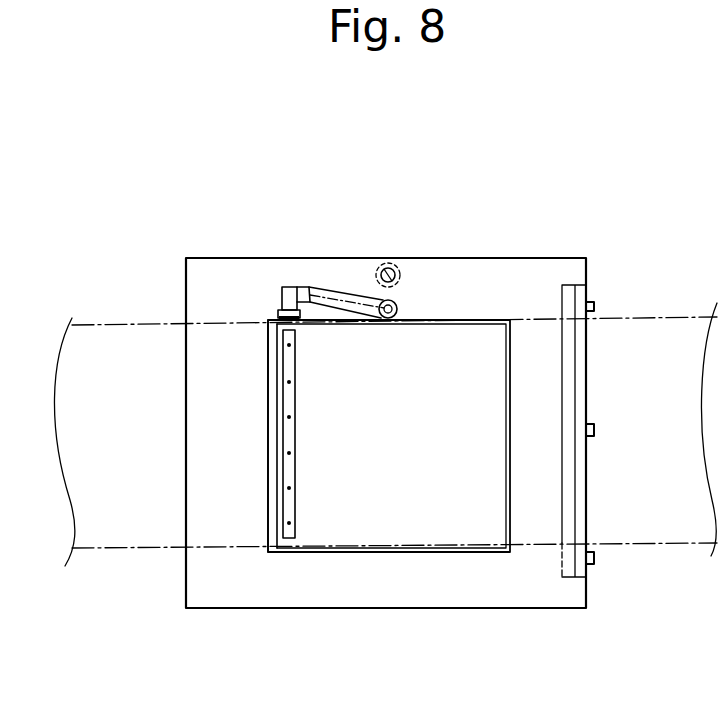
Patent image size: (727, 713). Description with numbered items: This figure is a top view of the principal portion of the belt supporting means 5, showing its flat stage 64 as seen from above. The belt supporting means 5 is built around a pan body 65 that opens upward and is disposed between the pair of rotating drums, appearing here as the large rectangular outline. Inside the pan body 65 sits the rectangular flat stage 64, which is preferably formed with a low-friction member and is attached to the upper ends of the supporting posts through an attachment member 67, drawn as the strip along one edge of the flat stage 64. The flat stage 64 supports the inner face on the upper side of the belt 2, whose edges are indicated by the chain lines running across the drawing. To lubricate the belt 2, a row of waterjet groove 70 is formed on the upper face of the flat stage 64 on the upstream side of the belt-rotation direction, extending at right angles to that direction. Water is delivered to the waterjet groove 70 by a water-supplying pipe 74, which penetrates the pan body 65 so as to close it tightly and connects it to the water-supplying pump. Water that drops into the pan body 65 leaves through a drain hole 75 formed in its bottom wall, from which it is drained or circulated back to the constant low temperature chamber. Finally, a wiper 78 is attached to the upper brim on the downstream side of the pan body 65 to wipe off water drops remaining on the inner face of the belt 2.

The belt 2 is at (661, 314).
The belt supporting means 5 is at (460, 203).
The flat stage 64 is at (464, 404).
The pan body 65 is at (254, 256).
The attachment member 67 is at (268, 410).
The waterjet groove 70 is at (296, 502).
The water-supplying pipe 74 is at (294, 278).
The drain hole 75 is at (391, 264).
The wiper 78 is at (563, 520).